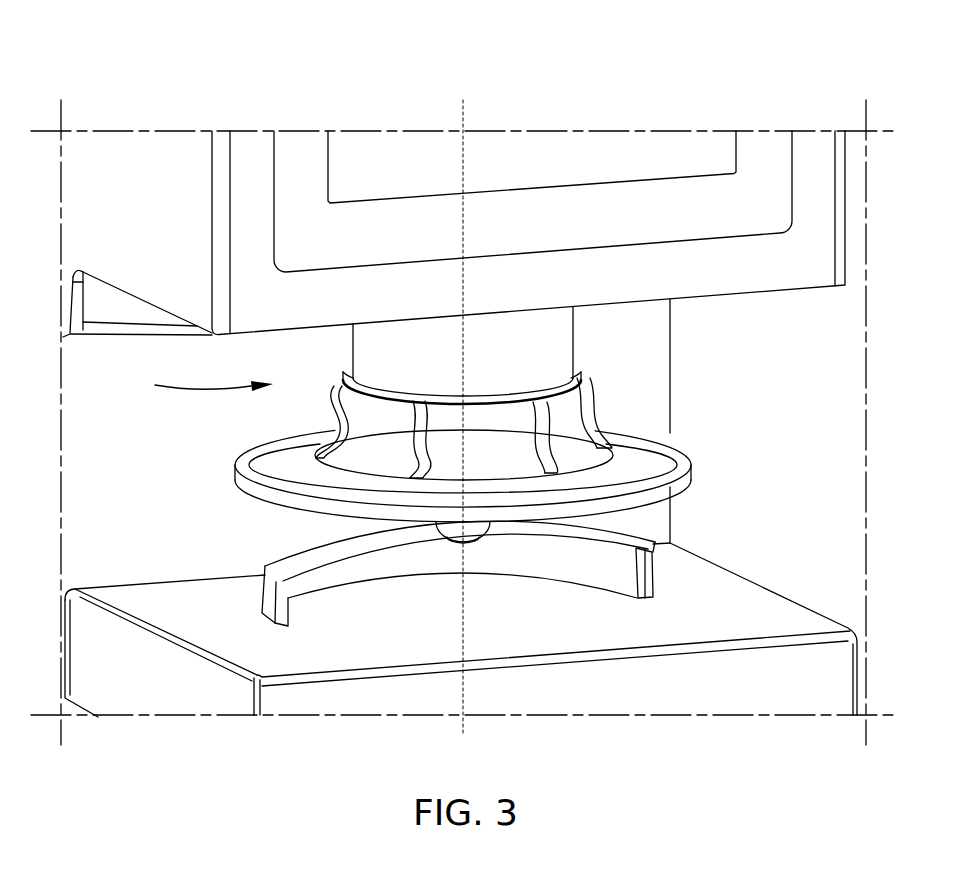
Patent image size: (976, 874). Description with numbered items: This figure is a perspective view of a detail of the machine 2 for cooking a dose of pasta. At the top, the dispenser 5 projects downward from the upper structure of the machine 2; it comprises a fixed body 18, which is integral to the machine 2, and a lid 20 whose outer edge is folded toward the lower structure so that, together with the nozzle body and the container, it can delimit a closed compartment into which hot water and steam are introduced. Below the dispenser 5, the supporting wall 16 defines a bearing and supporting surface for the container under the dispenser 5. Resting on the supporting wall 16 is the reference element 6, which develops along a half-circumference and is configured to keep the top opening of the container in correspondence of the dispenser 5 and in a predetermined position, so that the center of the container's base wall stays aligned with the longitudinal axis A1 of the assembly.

The machine 2 is at (114, 92).
The longitudinal axis A1 is at (467, 232).
The fixed body 18 is at (538, 343).
The lid 20 is at (570, 417).
The reference element 6 is at (315, 562).
The supporting wall 16 is at (743, 598).
The dispenser 5 is at (202, 389).